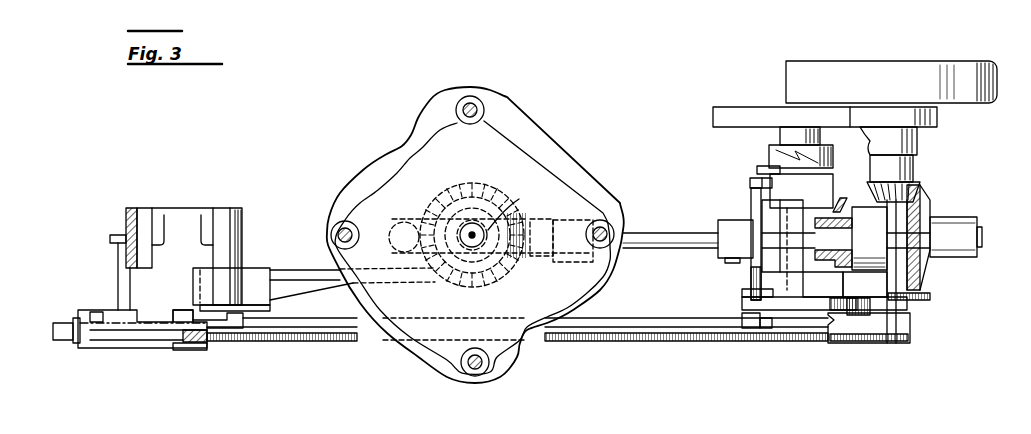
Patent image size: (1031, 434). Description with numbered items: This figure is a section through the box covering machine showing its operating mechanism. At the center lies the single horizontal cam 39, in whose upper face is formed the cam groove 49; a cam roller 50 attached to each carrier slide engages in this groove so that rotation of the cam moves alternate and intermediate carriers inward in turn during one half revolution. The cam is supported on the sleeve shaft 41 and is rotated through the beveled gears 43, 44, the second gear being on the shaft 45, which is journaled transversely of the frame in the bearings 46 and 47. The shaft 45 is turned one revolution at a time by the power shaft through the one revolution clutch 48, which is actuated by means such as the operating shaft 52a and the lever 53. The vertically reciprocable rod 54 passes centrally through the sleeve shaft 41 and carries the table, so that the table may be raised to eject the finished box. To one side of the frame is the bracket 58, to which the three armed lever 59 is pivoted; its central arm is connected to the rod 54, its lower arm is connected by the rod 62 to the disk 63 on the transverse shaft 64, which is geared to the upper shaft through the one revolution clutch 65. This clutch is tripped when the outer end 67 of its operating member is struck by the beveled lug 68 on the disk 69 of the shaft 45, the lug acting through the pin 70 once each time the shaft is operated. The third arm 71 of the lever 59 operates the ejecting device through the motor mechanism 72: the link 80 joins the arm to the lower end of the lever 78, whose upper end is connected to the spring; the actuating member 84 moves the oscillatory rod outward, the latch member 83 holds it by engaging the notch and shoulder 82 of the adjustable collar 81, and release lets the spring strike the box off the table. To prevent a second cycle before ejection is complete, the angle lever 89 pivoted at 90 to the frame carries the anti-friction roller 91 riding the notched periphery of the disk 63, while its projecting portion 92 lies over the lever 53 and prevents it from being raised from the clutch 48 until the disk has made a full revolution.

The cam 39 is at (331, 228).
The sleeve shaft 41 is at (515, 208).
The beveled gear 43 is at (456, 283).
The beveled gear 44 is at (549, 231).
The shaft 45 is at (676, 233).
The bearing 46 is at (624, 226).
The bearing 47 is at (843, 210).
The one revolution clutch 48 is at (922, 203).
The cam groove 49 is at (538, 138).
The cam roller 50 is at (416, 228).
The operating shaft 52a is at (693, 341).
The lever 53 is at (897, 303).
The vertically reciprocable rod 54 is at (472, 235).
The bracket 58 is at (180, 240).
The three armed lever 59 is at (309, 286).
The rod 62 is at (699, 318).
The disk 63 is at (814, 325).
The transverse shaft 64 is at (795, 280).
The one revolution clutch 65 is at (770, 153).
The outer end 67 is at (759, 169).
The lug 68 is at (751, 182).
The disk 69 is at (752, 201).
The pin 70 is at (786, 190).
The third arm 71 is at (231, 286).
The motor mechanism 72 is at (64, 322).
The lever 78 is at (183, 318).
The link 80 is at (224, 307).
The adjustable collar 81 is at (201, 350).
The notch and shoulder 82 is at (212, 340).
The latch member 83 is at (158, 349).
The actuating member 84 is at (114, 325).
The angle lever 89 is at (921, 292).
The pivot 90 is at (825, 297).
The anti-friction roller 91 is at (872, 309).
The projecting portion 92 is at (891, 298).